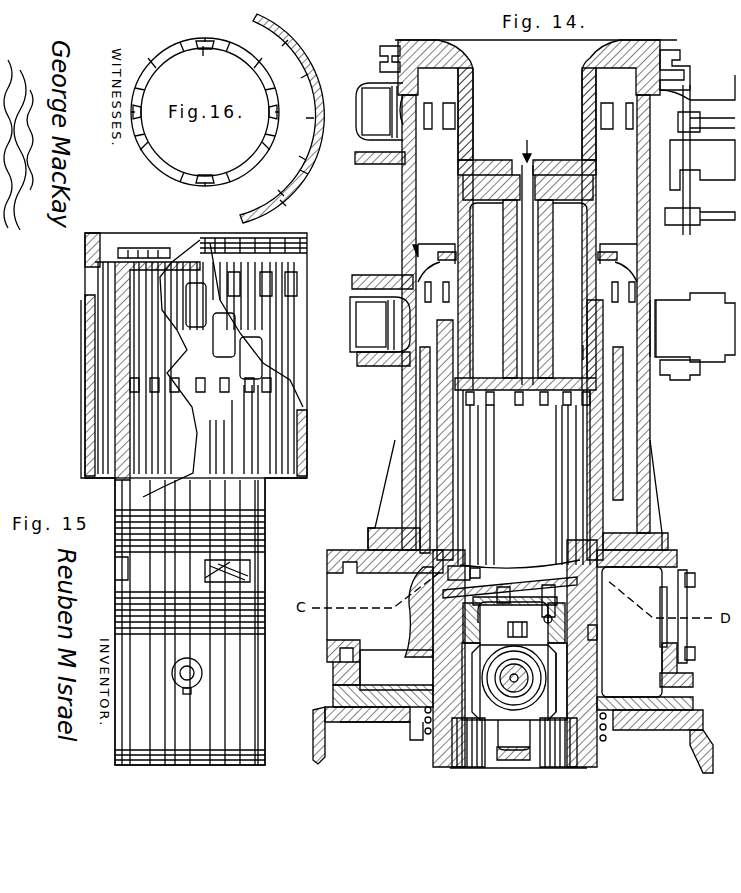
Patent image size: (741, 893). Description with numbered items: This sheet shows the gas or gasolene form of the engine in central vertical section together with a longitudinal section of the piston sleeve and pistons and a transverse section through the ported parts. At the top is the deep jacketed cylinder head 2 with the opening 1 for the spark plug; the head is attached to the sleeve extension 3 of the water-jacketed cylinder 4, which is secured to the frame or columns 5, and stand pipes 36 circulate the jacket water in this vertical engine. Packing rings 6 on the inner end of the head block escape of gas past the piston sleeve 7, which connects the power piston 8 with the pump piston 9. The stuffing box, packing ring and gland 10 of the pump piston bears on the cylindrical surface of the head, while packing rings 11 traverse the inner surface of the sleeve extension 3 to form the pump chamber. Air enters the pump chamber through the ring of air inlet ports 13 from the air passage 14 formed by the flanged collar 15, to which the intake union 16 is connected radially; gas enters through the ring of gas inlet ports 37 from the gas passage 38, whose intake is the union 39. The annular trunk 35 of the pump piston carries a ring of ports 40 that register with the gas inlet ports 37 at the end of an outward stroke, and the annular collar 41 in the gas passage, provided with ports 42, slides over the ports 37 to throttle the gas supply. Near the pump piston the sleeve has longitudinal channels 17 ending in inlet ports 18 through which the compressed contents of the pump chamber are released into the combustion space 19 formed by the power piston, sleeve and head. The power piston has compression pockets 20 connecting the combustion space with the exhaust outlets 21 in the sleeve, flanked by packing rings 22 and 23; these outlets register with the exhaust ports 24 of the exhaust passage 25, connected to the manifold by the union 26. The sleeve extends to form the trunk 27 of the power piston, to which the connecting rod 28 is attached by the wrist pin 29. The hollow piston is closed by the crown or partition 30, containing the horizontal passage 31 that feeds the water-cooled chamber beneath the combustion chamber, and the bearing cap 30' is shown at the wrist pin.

In FIG. 14, the opening for the atomizing valve 1 is at (526, 141).
In FIG. 14, the cylinder head 2 is at (582, 163).
In FIG. 14, the sleeve extension 3 is at (403, 226).
In FIG. 14, the water-jacketed cylinder 4 is at (667, 567).
In FIG. 14, the frame or columns 5 is at (697, 753).
In FIG. 14, the packing rings 6 is at (582, 353).
In FIG. 16, the piston sleeve 7 is at (250, 151).
In FIG. 15, the piston sleeve 7 is at (267, 498).
In FIG. 14, the piston sleeve 7 is at (587, 452).
In FIG. 14, the power piston 8 is at (512, 576).
In FIG. 15, the pump piston 9 is at (93, 235).
In FIG. 14, the pump piston 9 is at (632, 252).
In FIG. 15, the stuffing box, packing ring and gland 10 is at (133, 243).
In FIG. 14, the stuffing box, packing ring and gland 10 is at (447, 249).
In FIG. 14, the packing rings 11 is at (414, 249).
In FIG. 14, the air inlet ports 13 is at (522, 328).
In FIG. 14, the air passage 14 is at (543, 320).
In FIG. 14, the flanged collar 15 is at (358, 115).
In FIG. 14, the intake union 16 is at (720, 378).
In FIG. 16, the channels or passages 17 is at (270, 113).
In FIG. 15, the channels or passages 17 is at (224, 331).
In FIG. 16, the inlet ports 18 is at (204, 61).
In FIG. 15, the inlet ports 18 is at (122, 383).
In FIG. 14, the inlet ports 18 is at (545, 406).
In FIG. 14, the combustion space 19 is at (524, 477).
In FIG. 14, the compression pockets 20 is at (474, 576).
In FIG. 15, the exhaust outlets 21 is at (116, 567).
In FIG. 14, the exhaust outlets 21 is at (456, 570).
In FIG. 15, the packing ring 22 is at (267, 527).
In FIG. 14, the packing ring 22 is at (648, 632).
In FIG. 15, the packing ring 23 is at (267, 625).
In FIG. 14, the packing ring 23 is at (597, 627).
In FIG. 14, the exhaust ports 24 is at (443, 578).
In FIG. 14, the exhaust passage 25 is at (360, 606).
In FIG. 14, the union 26 is at (327, 648).
In FIG. 14, the trunk 27 is at (452, 666).
In FIG. 14, the connecting rod 28 is at (518, 743).
In FIG. 14, the wrist pin 29 is at (519, 678).
In FIG. 14, the crown or partition 30 is at (514, 620).
In FIG. 14, the bearing cap 30' is at (595, 679).
In FIG. 14, the horizontal passage 31 is at (556, 619).
In FIG. 16, the annular trunk 35 is at (296, 182).
In FIG. 14, the annular trunk 35 is at (420, 410).
In FIG. 14, the stand pipes 36 is at (613, 518).
In FIG. 14, the gas inlet ports 37 is at (402, 112).
In FIG. 14, the gas passage or receiver 38 is at (376, 111).
In FIG. 14, the union 39 is at (730, 168).
In FIG. 16, the ports 40 is at (307, 162).
In FIG. 15, the ports 40 is at (300, 290).
In FIG. 14, the ports 40 is at (442, 294).
In FIG. 14, the annular valve or collar 41 is at (380, 68).
In FIG. 14, the ports 42 is at (690, 88).